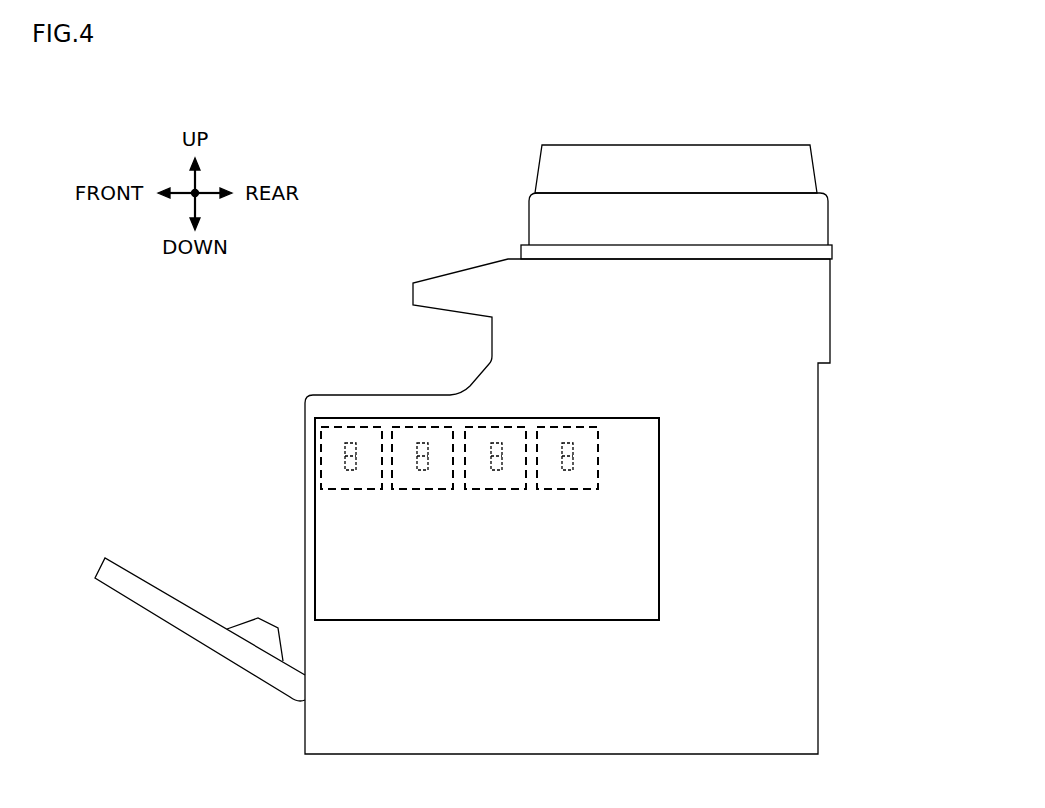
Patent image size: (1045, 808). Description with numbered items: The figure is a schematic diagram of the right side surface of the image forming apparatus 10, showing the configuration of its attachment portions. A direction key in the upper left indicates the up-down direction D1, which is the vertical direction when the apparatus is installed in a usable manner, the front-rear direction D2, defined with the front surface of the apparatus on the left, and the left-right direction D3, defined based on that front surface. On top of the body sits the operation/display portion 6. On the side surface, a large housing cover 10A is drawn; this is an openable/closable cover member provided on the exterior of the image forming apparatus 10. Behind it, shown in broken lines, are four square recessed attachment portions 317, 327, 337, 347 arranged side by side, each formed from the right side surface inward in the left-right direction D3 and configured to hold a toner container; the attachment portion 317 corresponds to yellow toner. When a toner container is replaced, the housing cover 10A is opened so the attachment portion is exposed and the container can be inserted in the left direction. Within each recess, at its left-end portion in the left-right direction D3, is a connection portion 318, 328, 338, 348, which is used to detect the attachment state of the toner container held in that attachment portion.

The image forming apparatus 10 is at (378, 183).
The housing cover 10A is at (659, 466).
The operation/display portion 6 is at (448, 267).
The attachment portion 317 is at (362, 425).
The attachment portion 327 is at (434, 425).
The attachment portion 337 is at (506, 425).
The attachment portion 347 is at (578, 425).
The connection portion 318 is at (358, 478).
The connection portion 328 is at (427, 478).
The connection portion 338 is at (500, 478).
The connection portion 348 is at (570, 478).
The up-down direction D1 is at (193, 180).
The front-rear direction D2 is at (182, 197).
The left-right direction D3 is at (200, 197).